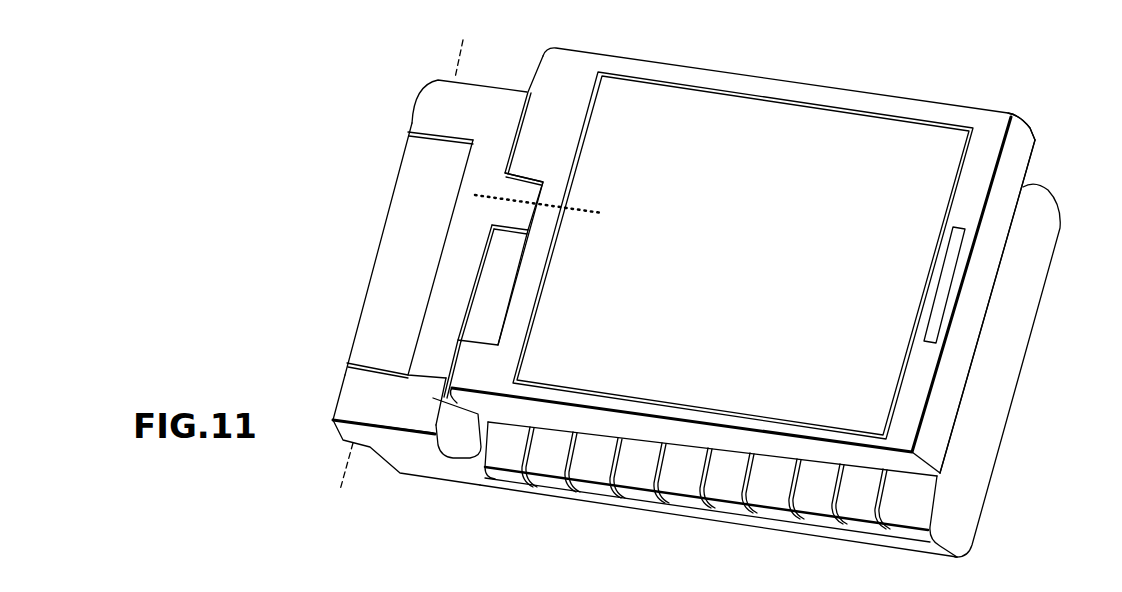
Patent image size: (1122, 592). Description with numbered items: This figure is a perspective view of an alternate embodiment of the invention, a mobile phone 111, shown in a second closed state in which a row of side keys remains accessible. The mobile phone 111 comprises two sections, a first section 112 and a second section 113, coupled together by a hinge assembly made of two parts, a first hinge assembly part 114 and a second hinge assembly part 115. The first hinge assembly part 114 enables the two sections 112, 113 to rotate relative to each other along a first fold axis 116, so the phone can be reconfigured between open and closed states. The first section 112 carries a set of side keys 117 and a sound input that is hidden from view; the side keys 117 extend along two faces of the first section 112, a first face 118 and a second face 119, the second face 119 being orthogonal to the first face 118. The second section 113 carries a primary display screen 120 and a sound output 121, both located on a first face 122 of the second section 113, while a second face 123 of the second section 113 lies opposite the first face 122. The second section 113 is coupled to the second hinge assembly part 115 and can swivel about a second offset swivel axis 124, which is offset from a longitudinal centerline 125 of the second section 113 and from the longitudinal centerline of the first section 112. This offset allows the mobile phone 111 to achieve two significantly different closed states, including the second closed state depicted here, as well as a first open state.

The mobile phone 111 is at (1016, 480).
The first section 112 is at (1052, 225).
The second section 113 is at (1022, 148).
The first hinge assembly part 114 is at (365, 325).
The second hinge assembly part 115 is at (345, 386).
The first fold axis 116 is at (347, 478).
The side keys 117 is at (928, 565).
The first face 118 is at (479, 450).
The second face 119 is at (420, 468).
The primary display screen 120 is at (727, 103).
The sound output 121 is at (955, 253).
The first face 122 is at (560, 62).
The second face 123 is at (1048, 125).
The second offset swivel axis 124 is at (487, 197).
The longitudinal centerline 125 is at (460, 268).